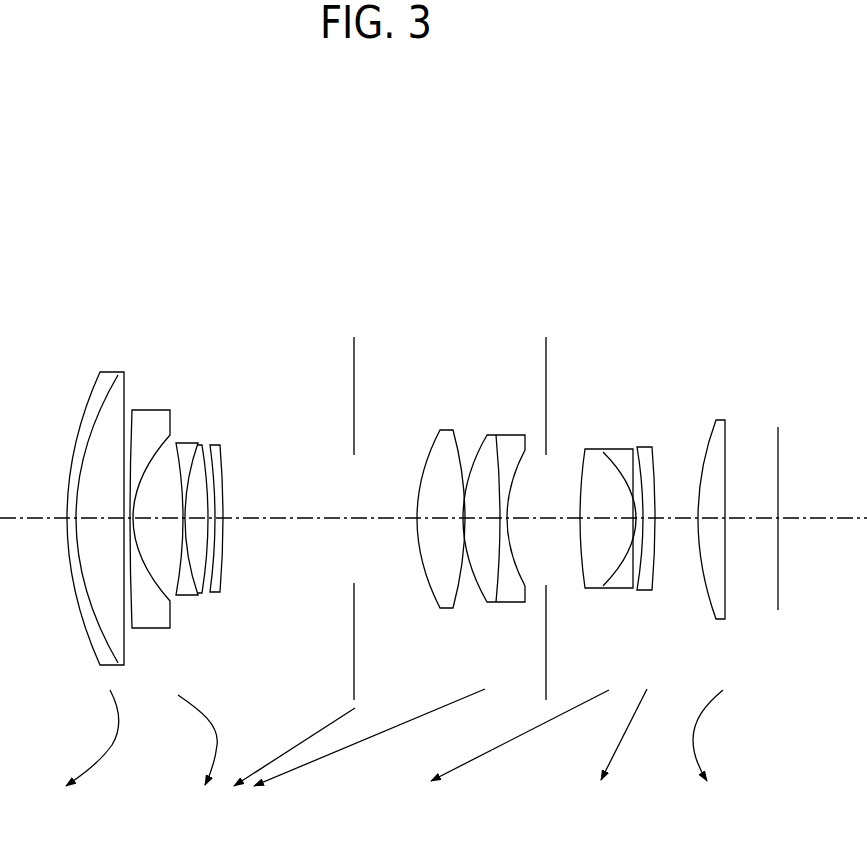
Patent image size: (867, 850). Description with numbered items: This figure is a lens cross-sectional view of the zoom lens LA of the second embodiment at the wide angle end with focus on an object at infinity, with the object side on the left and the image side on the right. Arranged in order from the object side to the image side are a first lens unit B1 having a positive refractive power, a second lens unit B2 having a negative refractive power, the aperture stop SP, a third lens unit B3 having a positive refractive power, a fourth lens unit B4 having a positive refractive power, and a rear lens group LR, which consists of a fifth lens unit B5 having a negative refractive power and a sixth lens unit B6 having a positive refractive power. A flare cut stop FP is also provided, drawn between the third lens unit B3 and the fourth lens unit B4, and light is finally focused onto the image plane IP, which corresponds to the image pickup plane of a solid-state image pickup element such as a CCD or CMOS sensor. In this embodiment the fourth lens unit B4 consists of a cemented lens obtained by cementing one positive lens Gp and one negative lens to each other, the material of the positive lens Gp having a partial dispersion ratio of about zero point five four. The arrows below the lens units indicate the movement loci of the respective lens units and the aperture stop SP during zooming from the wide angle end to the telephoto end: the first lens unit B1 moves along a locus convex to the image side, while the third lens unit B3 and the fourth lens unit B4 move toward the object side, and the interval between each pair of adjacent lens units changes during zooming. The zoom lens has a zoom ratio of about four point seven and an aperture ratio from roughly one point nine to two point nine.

The zoom lens LA is at (737, 268).
The rear lens group LR is at (738, 302).
The first lens unit B1 is at (121, 345).
The second lens unit B2 is at (222, 345).
The third lens unit B3 is at (542, 345).
The fourth lens unit B4 is at (533, 544).
The fifth lens unit B5 is at (648, 345).
The sixth lens unit B6 is at (738, 345).
The aperture stop SP is at (354, 397).
The flare cut stop FP is at (546, 395).
The positive lens Gp is at (596, 455).
The image plane IP is at (778, 470).